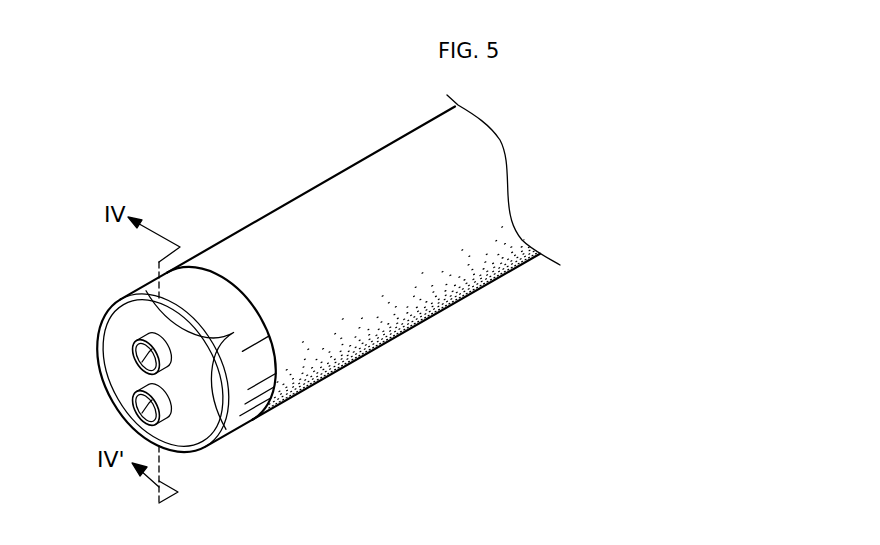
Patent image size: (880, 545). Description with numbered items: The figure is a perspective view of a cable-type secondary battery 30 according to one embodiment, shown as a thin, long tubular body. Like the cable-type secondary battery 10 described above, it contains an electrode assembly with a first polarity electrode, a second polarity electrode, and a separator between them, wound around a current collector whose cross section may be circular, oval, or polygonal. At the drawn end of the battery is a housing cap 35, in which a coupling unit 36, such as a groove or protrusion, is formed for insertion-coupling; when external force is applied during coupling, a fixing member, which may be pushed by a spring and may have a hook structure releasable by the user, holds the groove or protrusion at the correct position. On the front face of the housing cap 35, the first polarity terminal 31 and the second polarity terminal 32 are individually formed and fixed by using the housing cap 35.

The cable-type secondary battery 10 is at (268, 224).
The cable-type secondary battery 30 is at (285, 166).
The first polarity terminal 31 is at (137, 412).
The second polarity terminal 32 is at (137, 363).
The housing cap 35 is at (198, 282).
The coupling unit 36 is at (250, 413).